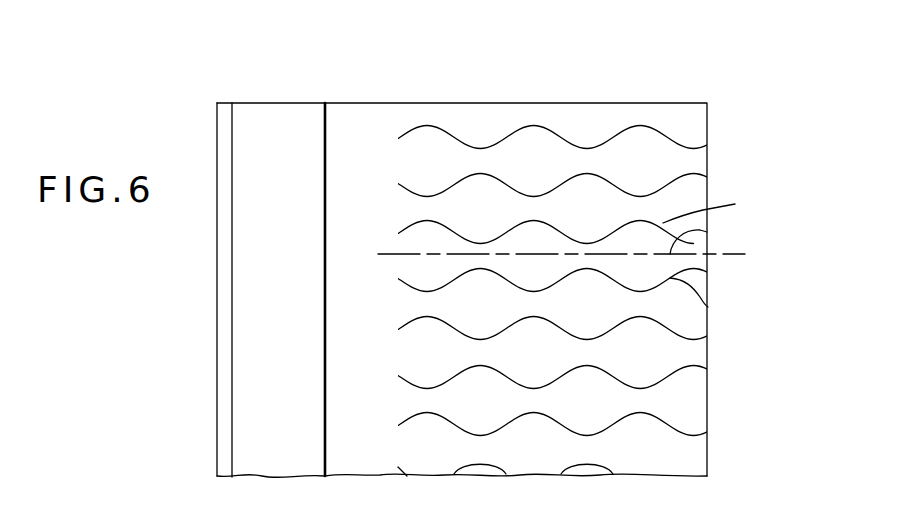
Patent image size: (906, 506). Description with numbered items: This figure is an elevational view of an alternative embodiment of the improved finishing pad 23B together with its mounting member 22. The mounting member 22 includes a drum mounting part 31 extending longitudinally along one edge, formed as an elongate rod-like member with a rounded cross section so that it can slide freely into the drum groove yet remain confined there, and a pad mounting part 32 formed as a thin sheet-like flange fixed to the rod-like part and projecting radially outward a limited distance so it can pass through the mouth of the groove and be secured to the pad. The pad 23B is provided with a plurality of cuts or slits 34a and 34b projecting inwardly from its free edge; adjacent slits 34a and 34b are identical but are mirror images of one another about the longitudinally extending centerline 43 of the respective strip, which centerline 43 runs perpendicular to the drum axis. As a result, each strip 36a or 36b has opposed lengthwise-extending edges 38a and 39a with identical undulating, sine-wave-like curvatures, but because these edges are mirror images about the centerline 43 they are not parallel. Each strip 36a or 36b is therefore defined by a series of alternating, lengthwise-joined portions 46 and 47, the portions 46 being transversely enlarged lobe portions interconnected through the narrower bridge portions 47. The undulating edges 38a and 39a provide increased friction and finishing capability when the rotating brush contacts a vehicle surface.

The mounting member 22 is at (259, 103).
The finishing pad 23B is at (354, 102).
The drum mounting part 31 is at (224, 347).
The pad mounting part 32 is at (243, 270).
The slit 34a is at (729, 205).
The slit 34b is at (708, 307).
The strip 36a is at (471, 200).
The strip 36b is at (528, 157).
The lengthwise-extending edge 38a is at (542, 221).
The lengthwise-extending edge 39a is at (560, 278).
The centerline 43 is at (707, 231).
The lobe portion 46 is at (430, 279).
The bridge portion 47 is at (480, 259).